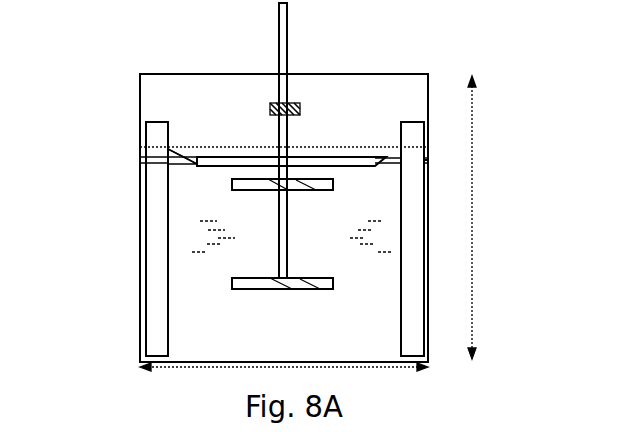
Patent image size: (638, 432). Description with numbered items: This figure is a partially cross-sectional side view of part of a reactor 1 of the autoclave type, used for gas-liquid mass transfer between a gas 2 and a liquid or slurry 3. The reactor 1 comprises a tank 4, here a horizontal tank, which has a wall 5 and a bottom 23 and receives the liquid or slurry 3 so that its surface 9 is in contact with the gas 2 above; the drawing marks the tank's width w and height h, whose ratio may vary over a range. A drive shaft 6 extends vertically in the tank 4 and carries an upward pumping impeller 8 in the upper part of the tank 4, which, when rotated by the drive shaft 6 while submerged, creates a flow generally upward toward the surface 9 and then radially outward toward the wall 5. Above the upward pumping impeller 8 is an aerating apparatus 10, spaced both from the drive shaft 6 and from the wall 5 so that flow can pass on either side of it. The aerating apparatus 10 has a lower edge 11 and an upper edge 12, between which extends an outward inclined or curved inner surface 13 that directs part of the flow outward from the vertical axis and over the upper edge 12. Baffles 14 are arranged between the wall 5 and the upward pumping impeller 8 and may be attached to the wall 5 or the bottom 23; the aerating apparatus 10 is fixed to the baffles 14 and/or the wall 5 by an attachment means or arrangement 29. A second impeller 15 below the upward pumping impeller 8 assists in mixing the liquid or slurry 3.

The reactor 1 is at (118, 52).
The gas 2 is at (325, 132).
The liquid or slurry 3 is at (343, 335).
The tank 4 is at (140, 108).
The wall 5 is at (140, 218).
The drive shaft 6 is at (282, 32).
The upward pumping impeller 8 is at (305, 203).
The surface 9 is at (326, 145).
The aerating apparatus 10 is at (336, 163).
The lower edge 11 is at (195, 164).
The upper edge 12 is at (186, 152).
The inner surface 13 is at (194, 163).
The baffles 14 is at (156, 270).
The second impeller 15 is at (333, 277).
The bottom 23 is at (176, 364).
The attachment means or arrangement 29 is at (426, 160).
The height h is at (474, 234).
The width w is at (401, 365).